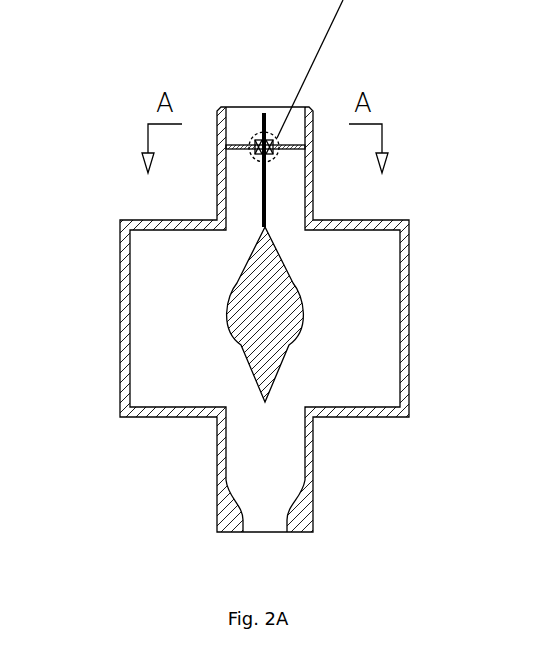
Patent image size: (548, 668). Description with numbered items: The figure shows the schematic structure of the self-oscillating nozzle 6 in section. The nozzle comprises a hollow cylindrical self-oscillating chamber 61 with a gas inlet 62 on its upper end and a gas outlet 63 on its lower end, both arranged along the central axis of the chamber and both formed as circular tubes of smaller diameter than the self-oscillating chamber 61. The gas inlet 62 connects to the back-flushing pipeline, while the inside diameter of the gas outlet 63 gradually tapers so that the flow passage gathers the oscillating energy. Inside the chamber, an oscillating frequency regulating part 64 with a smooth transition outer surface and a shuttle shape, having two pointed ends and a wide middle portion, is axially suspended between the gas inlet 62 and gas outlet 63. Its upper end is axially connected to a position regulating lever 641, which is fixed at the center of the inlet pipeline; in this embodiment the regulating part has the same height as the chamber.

The self-oscillating nozzle 6 is at (313, 319).
The self-oscillating chamber 61 is at (125, 283).
The gas inlet 62 is at (220, 130).
The gas outlet 63 is at (224, 505).
The oscillating frequency regulating part 64 is at (288, 335).
The position regulating lever 641 is at (267, 140).